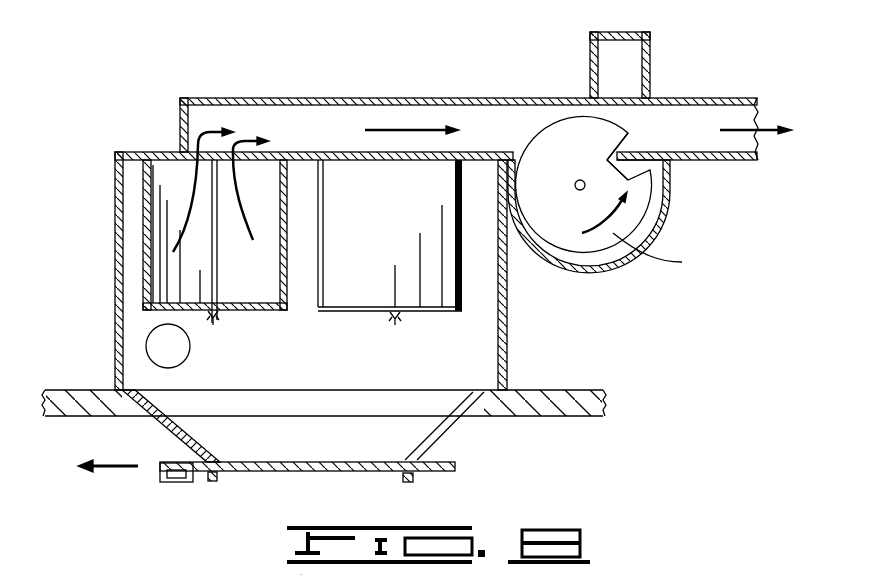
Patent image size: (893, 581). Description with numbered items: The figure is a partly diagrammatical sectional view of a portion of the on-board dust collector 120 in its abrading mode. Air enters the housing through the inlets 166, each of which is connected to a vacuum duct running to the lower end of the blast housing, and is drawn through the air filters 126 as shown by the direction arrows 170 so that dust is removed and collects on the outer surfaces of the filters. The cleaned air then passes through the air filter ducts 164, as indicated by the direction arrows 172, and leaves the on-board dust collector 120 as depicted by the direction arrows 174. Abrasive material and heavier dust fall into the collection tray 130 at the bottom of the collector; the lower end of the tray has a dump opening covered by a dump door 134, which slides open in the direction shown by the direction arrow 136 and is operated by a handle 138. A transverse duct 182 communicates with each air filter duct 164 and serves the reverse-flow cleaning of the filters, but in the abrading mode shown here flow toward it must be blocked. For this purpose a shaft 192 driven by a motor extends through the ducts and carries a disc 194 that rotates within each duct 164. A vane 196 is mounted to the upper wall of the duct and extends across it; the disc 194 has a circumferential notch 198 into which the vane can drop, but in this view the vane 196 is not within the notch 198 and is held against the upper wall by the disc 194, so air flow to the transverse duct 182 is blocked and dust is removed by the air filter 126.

The on-board dust collector 120 is at (152, 112).
The air filters 126 is at (148, 228).
The collection tray 130 is at (310, 435).
The dump door 134 is at (298, 472).
The direction arrow 136 is at (112, 466).
The handle 138 is at (178, 483).
The air filter ducts 164 is at (300, 127).
The inlets 166 is at (150, 340).
The direction arrows 170 is at (233, 140).
The direction arrows 172 is at (380, 128).
The direction arrows 174 is at (757, 108).
The transverse duct 182 is at (632, 68).
The shaft 192 is at (578, 193).
The disc 194 is at (558, 127).
The vane 196 is at (685, 157).
The circumferential notch 198 is at (613, 140).